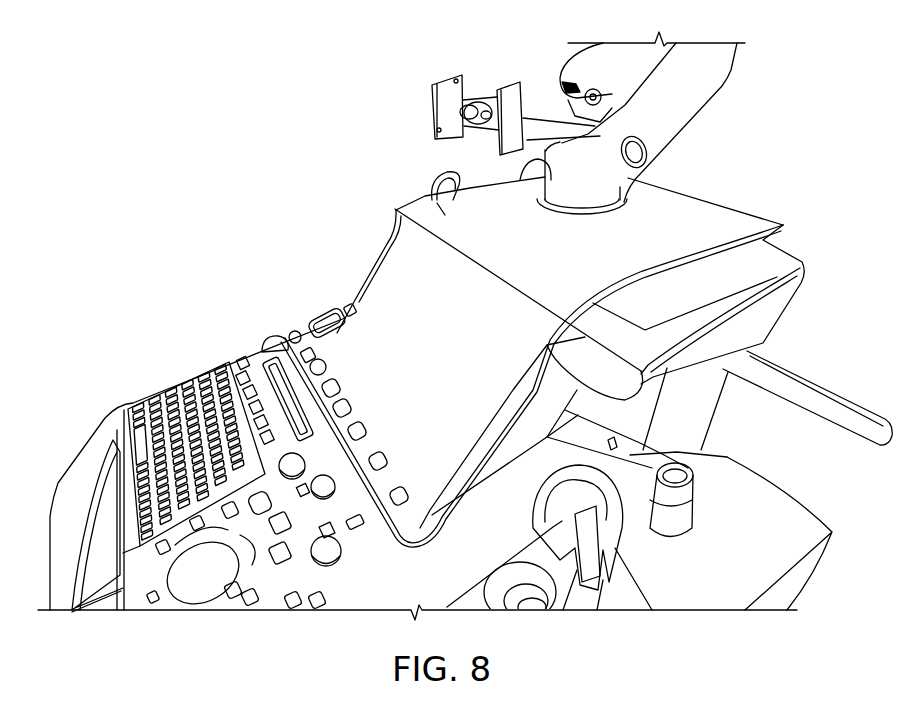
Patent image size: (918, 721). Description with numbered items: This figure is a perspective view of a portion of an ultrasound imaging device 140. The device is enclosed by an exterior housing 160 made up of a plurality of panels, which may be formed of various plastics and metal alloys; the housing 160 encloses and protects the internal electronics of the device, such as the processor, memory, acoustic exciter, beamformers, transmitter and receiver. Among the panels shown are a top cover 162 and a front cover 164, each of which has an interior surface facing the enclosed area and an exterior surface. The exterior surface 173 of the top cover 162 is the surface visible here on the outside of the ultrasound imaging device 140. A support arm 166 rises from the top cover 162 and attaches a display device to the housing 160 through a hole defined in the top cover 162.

The ultrasound imaging device 140 is at (239, 270).
The exterior housing 160 is at (648, 197).
The top cover 162 is at (726, 230).
The front cover 164 is at (393, 278).
The support arm 166 is at (677, 94).
The exterior surface 173 is at (427, 193).